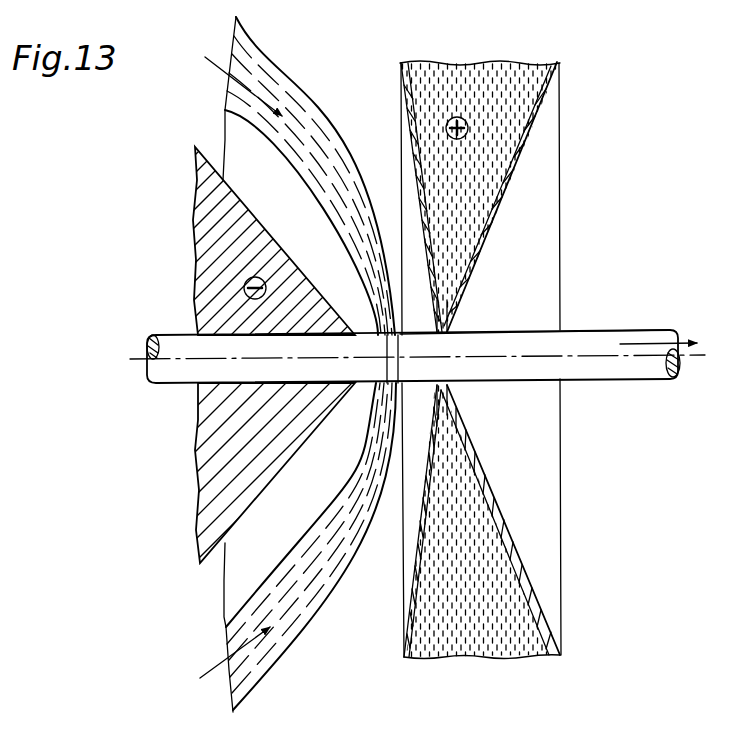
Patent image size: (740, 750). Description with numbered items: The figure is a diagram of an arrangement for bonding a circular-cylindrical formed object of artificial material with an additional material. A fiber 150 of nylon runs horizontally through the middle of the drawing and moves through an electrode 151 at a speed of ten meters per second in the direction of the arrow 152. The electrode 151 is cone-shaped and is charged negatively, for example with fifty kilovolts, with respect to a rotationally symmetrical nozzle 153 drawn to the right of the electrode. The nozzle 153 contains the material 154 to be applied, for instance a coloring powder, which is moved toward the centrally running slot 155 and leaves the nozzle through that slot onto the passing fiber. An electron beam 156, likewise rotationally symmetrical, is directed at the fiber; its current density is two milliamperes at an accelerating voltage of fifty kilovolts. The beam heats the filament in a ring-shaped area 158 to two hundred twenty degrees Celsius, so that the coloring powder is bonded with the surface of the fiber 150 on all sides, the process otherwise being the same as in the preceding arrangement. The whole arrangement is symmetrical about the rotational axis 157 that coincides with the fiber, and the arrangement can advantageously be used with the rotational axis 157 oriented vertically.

The fiber 150 is at (610, 372).
The electrode 151 is at (266, 483).
The arrow 152 is at (615, 337).
The nozzle 153 is at (497, 489).
The material to be applied 154 is at (494, 563).
The slot 155 is at (448, 324).
The electron beam 156 is at (320, 102).
The rotational axis 157 is at (690, 356).
The ring-shaped area 158 is at (400, 349).